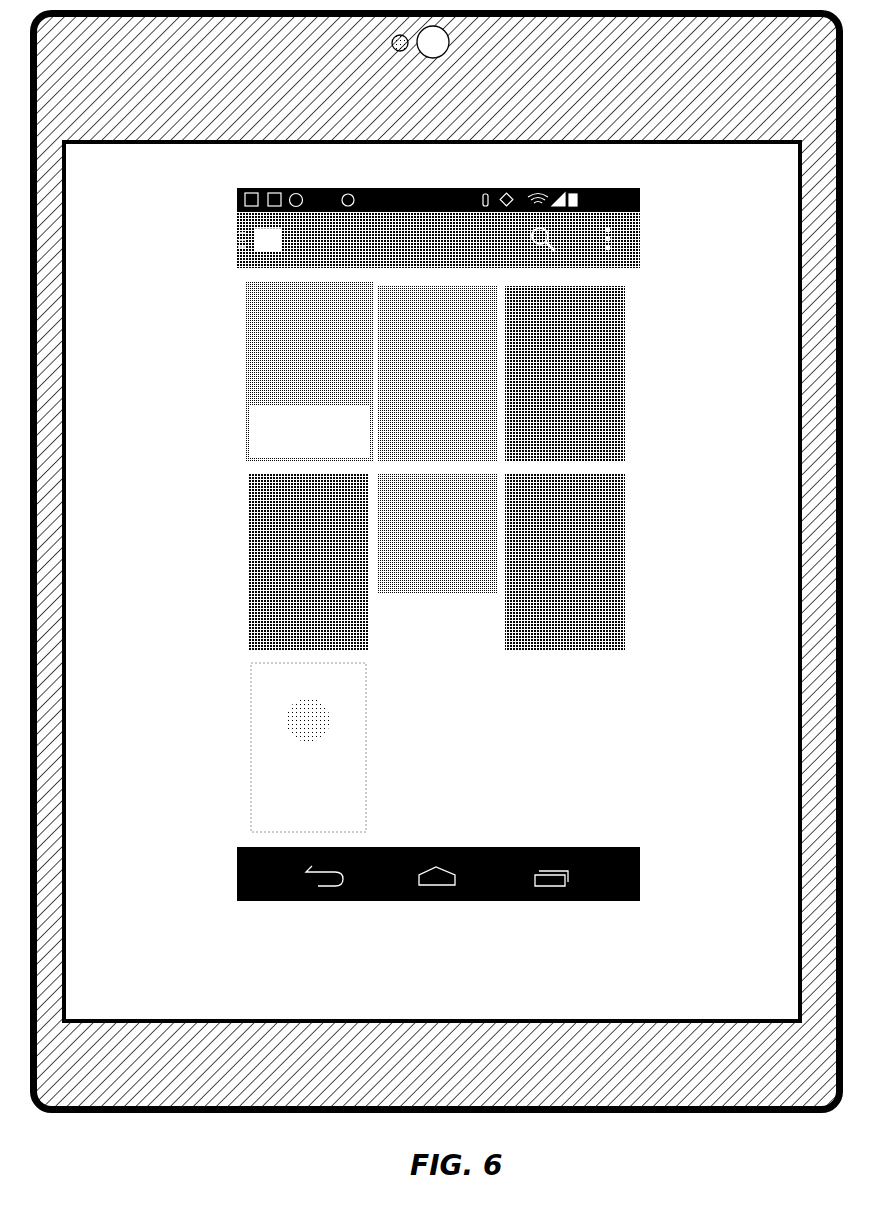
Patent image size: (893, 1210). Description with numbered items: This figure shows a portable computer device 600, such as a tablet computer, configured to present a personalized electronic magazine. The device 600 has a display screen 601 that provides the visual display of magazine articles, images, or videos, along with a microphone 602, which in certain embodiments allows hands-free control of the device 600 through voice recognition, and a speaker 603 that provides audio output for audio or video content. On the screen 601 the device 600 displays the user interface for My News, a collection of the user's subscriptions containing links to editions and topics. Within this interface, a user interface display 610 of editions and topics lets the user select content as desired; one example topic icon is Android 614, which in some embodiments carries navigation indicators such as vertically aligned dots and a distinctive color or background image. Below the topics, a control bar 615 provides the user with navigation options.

The portable computer device 600 is at (781, 1166).
The display screen 601 is at (791, 173).
The microphone 602 is at (385, 56).
The speaker 603 is at (450, 51).
The user interface display 610 is at (447, 582).
The Android topic icon 614 is at (626, 582).
The control bar 615 is at (632, 901).